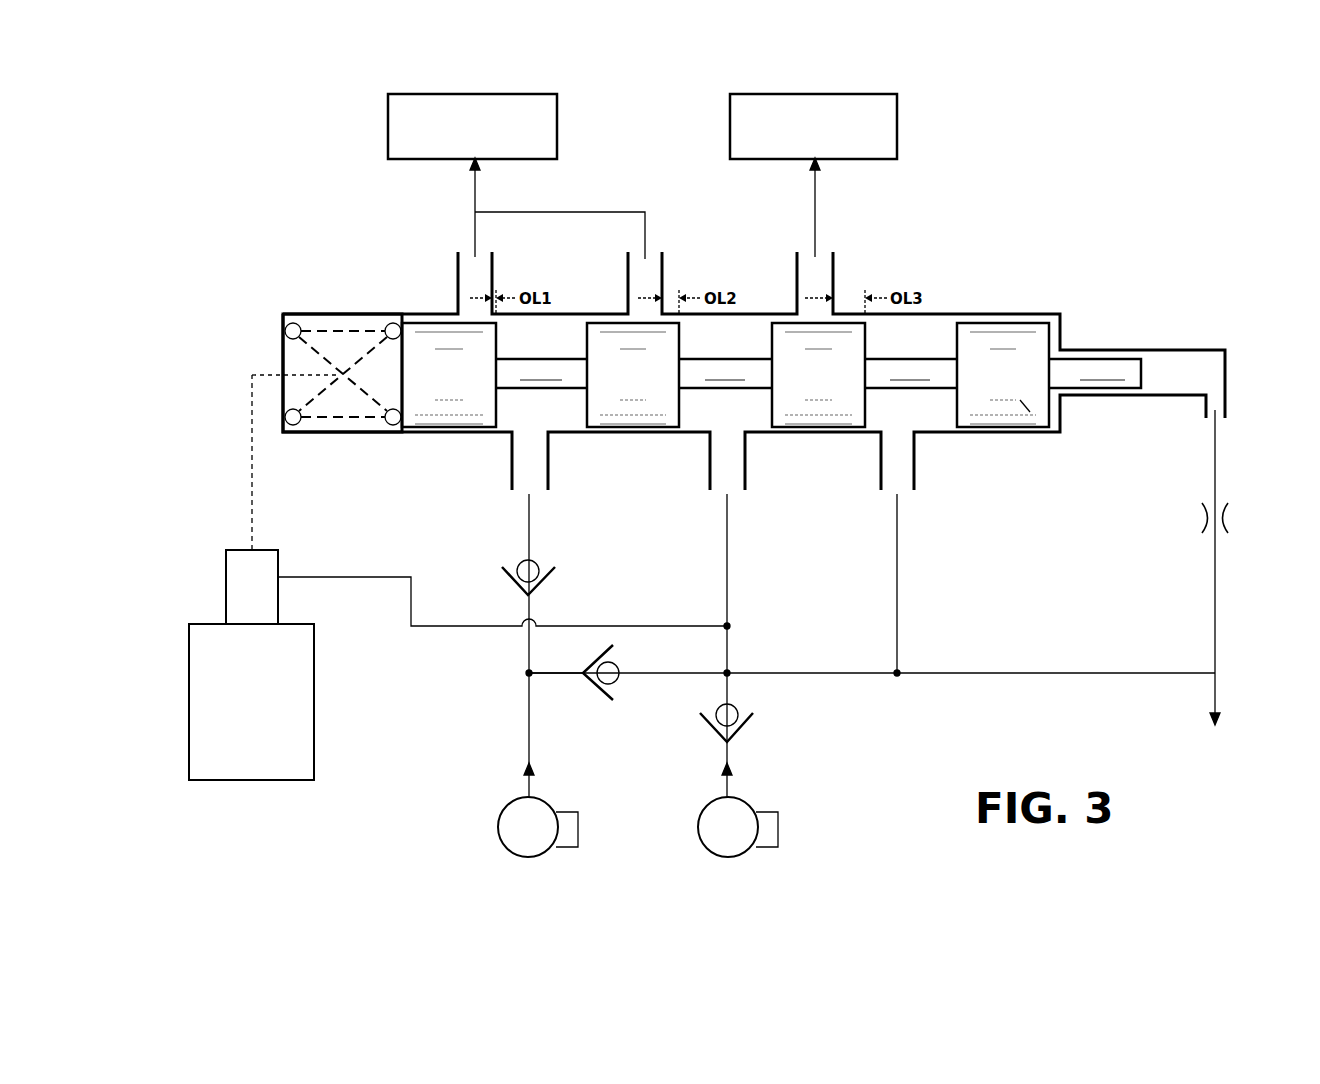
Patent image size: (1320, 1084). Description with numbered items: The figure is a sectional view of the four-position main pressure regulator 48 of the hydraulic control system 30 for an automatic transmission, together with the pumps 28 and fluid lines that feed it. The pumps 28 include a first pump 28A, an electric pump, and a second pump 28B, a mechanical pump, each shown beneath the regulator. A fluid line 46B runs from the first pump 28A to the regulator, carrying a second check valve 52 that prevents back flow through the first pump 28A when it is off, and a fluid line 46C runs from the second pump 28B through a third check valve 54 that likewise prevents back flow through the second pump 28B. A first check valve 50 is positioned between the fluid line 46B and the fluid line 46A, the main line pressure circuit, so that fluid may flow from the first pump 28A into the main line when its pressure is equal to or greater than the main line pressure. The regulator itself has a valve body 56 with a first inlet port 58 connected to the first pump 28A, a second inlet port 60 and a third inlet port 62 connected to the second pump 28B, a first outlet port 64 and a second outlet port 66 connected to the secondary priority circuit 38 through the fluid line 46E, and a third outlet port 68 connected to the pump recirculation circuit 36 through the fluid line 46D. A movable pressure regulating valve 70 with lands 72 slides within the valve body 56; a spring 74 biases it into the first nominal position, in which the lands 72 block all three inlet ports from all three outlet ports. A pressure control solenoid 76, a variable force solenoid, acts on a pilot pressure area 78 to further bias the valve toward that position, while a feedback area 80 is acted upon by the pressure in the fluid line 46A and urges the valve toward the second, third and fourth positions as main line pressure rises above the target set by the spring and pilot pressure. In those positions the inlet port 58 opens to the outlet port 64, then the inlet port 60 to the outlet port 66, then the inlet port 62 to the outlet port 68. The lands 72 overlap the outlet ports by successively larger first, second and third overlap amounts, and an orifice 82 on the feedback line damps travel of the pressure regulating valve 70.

The pumps 28 is at (627, 842).
The first pump 28A is at (498, 822).
The second pump 28B is at (742, 797).
The hydraulic control system 30 is at (1046, 186).
The fluid recirculation circuit 36 is at (897, 132).
The secondary priority circuit 38 is at (557, 132).
The fluid line 46A is at (1068, 676).
The fluid line 46B is at (529, 712).
The fluid line 46C is at (727, 745).
The fluid line 46D is at (815, 218).
The fluid line 46E is at (475, 187).
The four-position main pressure regulator 48 is at (950, 300).
The first check valve 50 is at (605, 700).
The second check valve 52 is at (538, 590).
The third check valve 54 is at (745, 724).
The valve body 56 is at (1017, 318).
The first inlet port 58 is at (548, 480).
The second inlet port 60 is at (745, 480).
The third inlet port 62 is at (914, 480).
The first outlet port 64 is at (492, 297).
The second outlet port 66 is at (662, 297).
The third outlet port 68 is at (833, 297).
The pressure regulating valve 70 is at (1093, 350).
The lands 72 is at (1020, 408).
The spring 74 is at (338, 328).
The pressure control solenoid 76 is at (189, 733).
The pilot pressure area 78 is at (233, 550).
The feedback area 80 is at (1168, 362).
The orifice 82 is at (1230, 517).